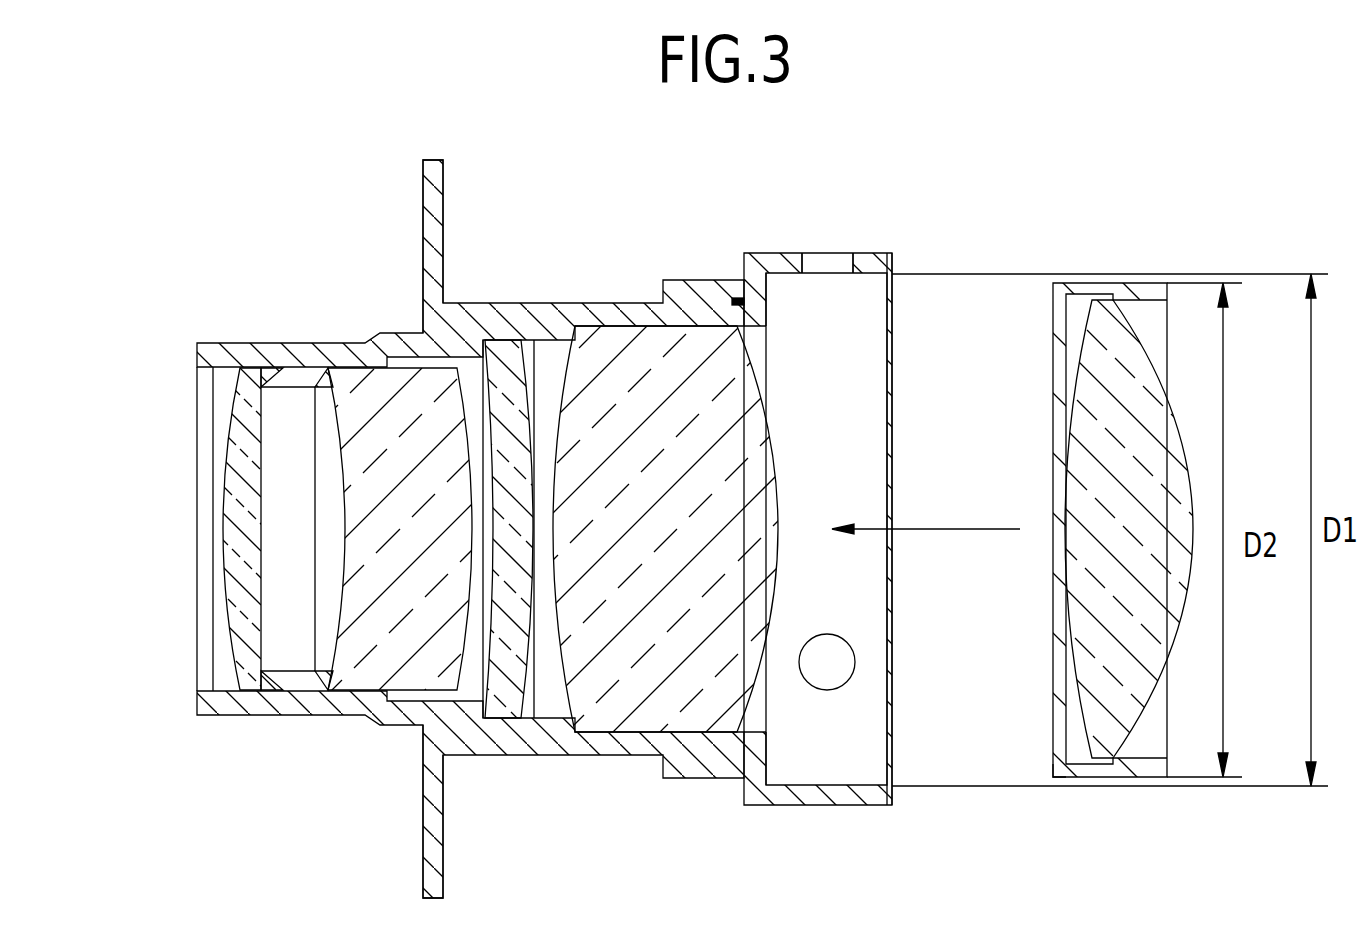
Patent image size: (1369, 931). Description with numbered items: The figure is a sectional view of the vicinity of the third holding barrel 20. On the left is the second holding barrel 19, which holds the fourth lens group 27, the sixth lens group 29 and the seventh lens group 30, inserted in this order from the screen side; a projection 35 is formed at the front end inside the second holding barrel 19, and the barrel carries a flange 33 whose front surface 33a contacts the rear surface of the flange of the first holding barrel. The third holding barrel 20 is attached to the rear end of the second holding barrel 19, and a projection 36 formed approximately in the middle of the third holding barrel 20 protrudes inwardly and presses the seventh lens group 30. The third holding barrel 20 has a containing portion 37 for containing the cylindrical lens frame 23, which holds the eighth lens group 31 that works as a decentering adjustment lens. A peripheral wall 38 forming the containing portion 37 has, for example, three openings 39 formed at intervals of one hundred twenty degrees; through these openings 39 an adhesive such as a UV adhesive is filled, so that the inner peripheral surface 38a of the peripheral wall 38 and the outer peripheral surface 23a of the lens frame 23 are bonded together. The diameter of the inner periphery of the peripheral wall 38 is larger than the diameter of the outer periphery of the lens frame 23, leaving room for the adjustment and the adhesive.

The second holding barrel 19 is at (525, 304).
The third holding barrel 20 is at (784, 243).
The cylindrical lens frame 23 is at (1062, 293).
The outer peripheral surface 23a is at (1053, 777).
The fourth lens group 27 is at (232, 575).
The sixth lens group 29 is at (520, 705).
The seventh lens group 30 is at (625, 700).
The eighth lens group 31 is at (1085, 555).
The flange 33 is at (423, 205).
The front surface 33a is at (423, 827).
The projection 35 is at (228, 370).
The projection 36 is at (750, 310).
The containing portion 37 is at (858, 488).
The peripheral wall 38 is at (873, 260).
The inner peripheral surface 38a is at (788, 272).
The openings 39 is at (832, 262).